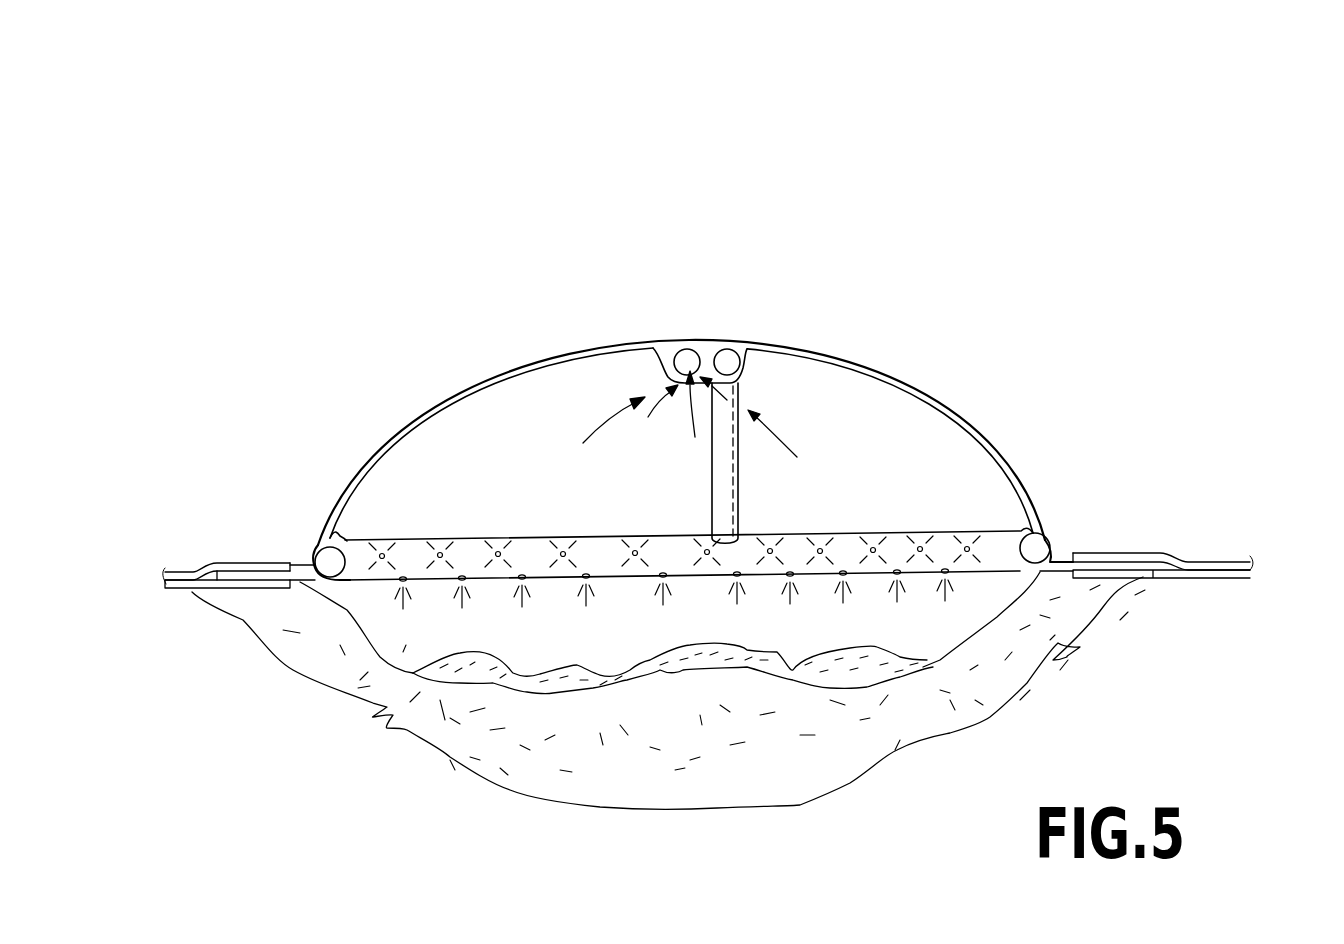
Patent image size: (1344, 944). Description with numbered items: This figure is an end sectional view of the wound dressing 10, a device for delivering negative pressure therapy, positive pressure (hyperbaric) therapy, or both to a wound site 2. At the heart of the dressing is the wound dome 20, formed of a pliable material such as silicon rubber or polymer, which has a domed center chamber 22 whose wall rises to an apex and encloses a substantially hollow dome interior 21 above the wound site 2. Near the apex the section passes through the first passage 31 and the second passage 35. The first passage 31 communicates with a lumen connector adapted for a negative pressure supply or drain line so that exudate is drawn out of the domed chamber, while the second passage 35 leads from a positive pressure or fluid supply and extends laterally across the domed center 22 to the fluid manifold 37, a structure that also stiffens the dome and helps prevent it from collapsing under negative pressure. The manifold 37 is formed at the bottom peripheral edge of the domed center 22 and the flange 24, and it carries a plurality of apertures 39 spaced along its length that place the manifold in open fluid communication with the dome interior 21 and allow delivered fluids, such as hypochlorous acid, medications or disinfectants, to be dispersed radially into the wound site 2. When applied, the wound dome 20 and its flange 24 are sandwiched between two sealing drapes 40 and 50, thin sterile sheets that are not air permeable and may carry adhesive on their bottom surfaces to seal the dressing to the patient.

The wound dressing 10 is at (1000, 172).
The wound dome 20 is at (456, 390).
The dome interior 21 is at (492, 485).
The domed center chamber 22 is at (957, 408).
The first passage 31 is at (680, 352).
The second passage 35 is at (728, 362).
The fluid manifold 37 is at (1040, 548).
The apertures 39 is at (821, 547).
The flange 24 is at (1105, 562).
The sealing drape 50 is at (1200, 550).
The sealing drape 40 is at (1157, 574).
The wound site 2 is at (778, 676).